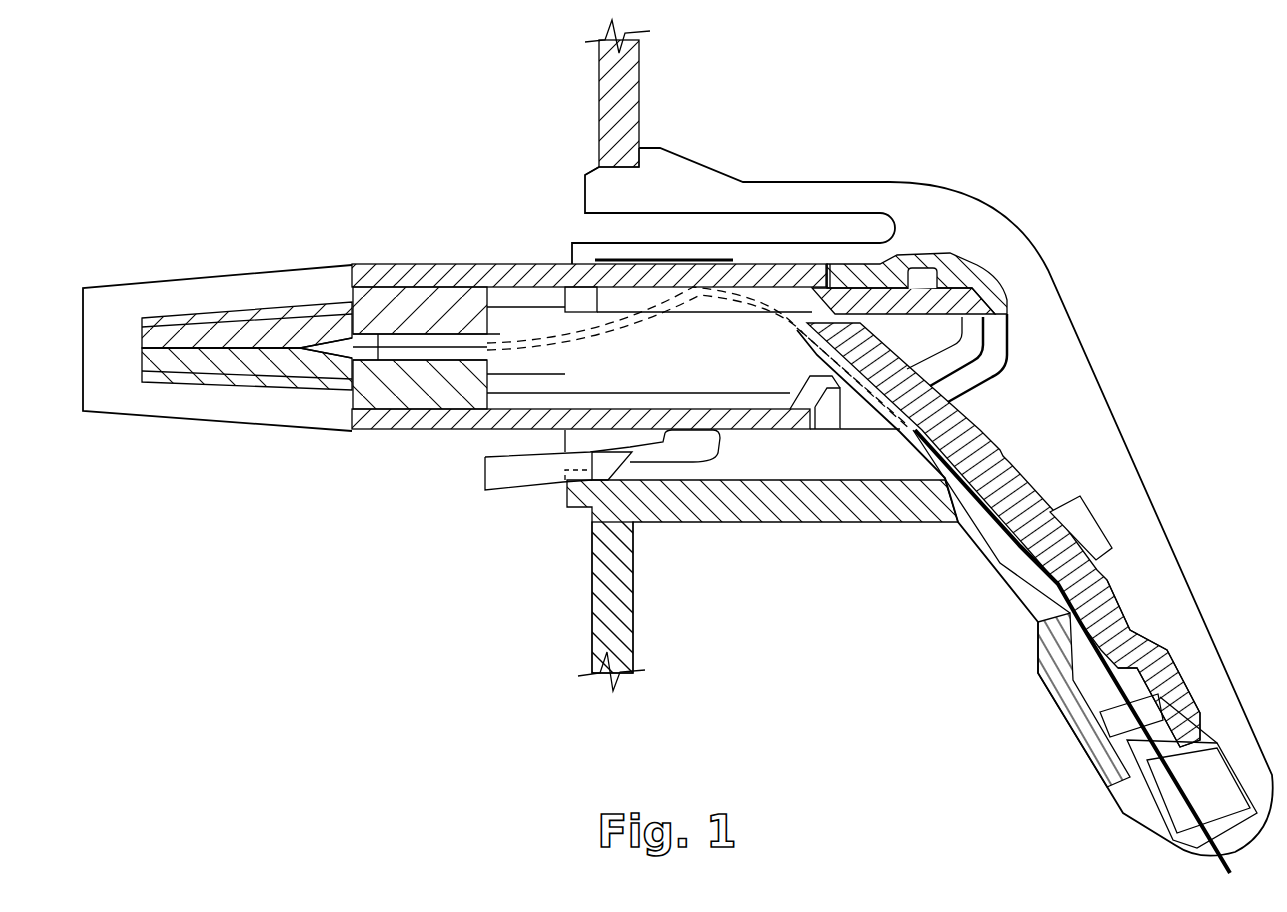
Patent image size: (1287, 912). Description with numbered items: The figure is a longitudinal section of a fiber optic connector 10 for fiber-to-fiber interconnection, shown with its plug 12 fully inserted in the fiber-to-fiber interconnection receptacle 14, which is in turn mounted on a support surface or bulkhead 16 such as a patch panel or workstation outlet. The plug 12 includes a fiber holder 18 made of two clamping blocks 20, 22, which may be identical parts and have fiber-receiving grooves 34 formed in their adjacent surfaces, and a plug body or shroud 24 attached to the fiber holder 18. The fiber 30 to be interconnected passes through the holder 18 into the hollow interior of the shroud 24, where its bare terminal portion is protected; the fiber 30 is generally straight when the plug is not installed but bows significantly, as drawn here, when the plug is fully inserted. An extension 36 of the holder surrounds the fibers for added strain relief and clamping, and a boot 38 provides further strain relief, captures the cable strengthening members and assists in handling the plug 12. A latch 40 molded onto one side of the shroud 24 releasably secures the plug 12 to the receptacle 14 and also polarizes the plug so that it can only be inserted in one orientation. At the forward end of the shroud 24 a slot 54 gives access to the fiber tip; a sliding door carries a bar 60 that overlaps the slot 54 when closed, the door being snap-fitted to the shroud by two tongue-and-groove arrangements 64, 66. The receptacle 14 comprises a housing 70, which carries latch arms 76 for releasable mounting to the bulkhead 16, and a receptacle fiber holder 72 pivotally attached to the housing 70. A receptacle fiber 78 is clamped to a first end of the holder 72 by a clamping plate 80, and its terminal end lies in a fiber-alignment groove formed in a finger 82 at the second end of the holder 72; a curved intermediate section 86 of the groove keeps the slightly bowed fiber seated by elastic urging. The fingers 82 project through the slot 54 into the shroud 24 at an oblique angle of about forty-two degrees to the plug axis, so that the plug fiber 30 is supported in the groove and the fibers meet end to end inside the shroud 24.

The fiber optic connector 10 is at (1133, 250).
The plug 12 is at (376, 257).
The fiber-to-fiber interconnection receptacle 14 is at (1163, 497).
The bulkhead 16 is at (597, 105).
The fiber holder 18 is at (426, 398).
The clamping block 20 is at (466, 318).
The clamping block 22 is at (466, 384).
The shroud 24 is at (487, 262).
The fiber 30 is at (582, 345).
The fiber-receiving grooves 34 is at (397, 356).
The extension 36 is at (192, 306).
The boot 38 is at (165, 405).
The latch 40 is at (527, 488).
The slot 54 is at (975, 345).
The bar 60 is at (978, 375).
The tongue-and-groove arrangement 64 is at (921, 266).
The tongue-and-groove arrangement 66 is at (811, 392).
The housing 70 is at (757, 523).
The receptacle fiber holder 72 is at (1107, 603).
The latch arms 76 is at (701, 163).
The receptacle fiber 78 is at (1100, 692).
The clamping plate 80 is at (1157, 815).
The fingers 82 is at (1008, 470).
The intermediate section 86 is at (1094, 573).